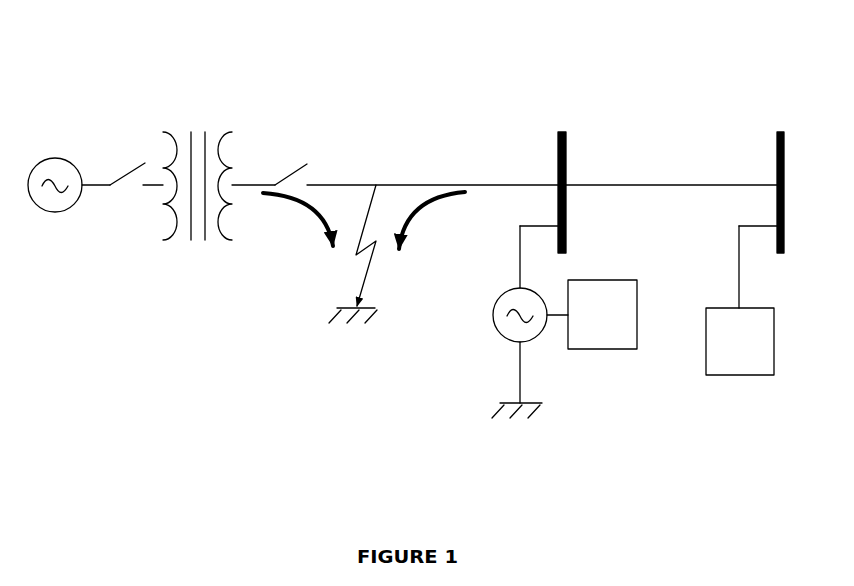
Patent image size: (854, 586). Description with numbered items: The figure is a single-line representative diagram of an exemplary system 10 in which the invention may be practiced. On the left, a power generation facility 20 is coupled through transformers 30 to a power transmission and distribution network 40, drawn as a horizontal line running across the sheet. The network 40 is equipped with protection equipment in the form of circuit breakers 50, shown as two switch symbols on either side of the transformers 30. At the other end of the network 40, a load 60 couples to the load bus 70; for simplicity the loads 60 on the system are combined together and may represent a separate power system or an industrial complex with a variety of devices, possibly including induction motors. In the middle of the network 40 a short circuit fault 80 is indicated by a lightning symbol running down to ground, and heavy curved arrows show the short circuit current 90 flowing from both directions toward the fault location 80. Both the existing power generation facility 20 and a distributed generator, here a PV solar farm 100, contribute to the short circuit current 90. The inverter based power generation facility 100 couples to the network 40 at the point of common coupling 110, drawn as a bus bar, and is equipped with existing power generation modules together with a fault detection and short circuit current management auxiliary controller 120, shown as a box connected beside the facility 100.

The system 10 is at (117, 298).
The power generation facility 20 is at (53, 214).
The transformers 30 is at (200, 254).
The power transmission and distribution network 40 is at (695, 183).
The circuit breakers 50 is at (282, 162).
The load 60 is at (744, 378).
The load bus 70 is at (782, 130).
The short circuit fault 80 is at (345, 339).
The short circuit current 90 is at (318, 207).
The PV solar farm 100 is at (499, 338).
The point of common coupling 110 is at (558, 129).
The fault detection and short circuit current management auxiliary controller 120 is at (599, 351).